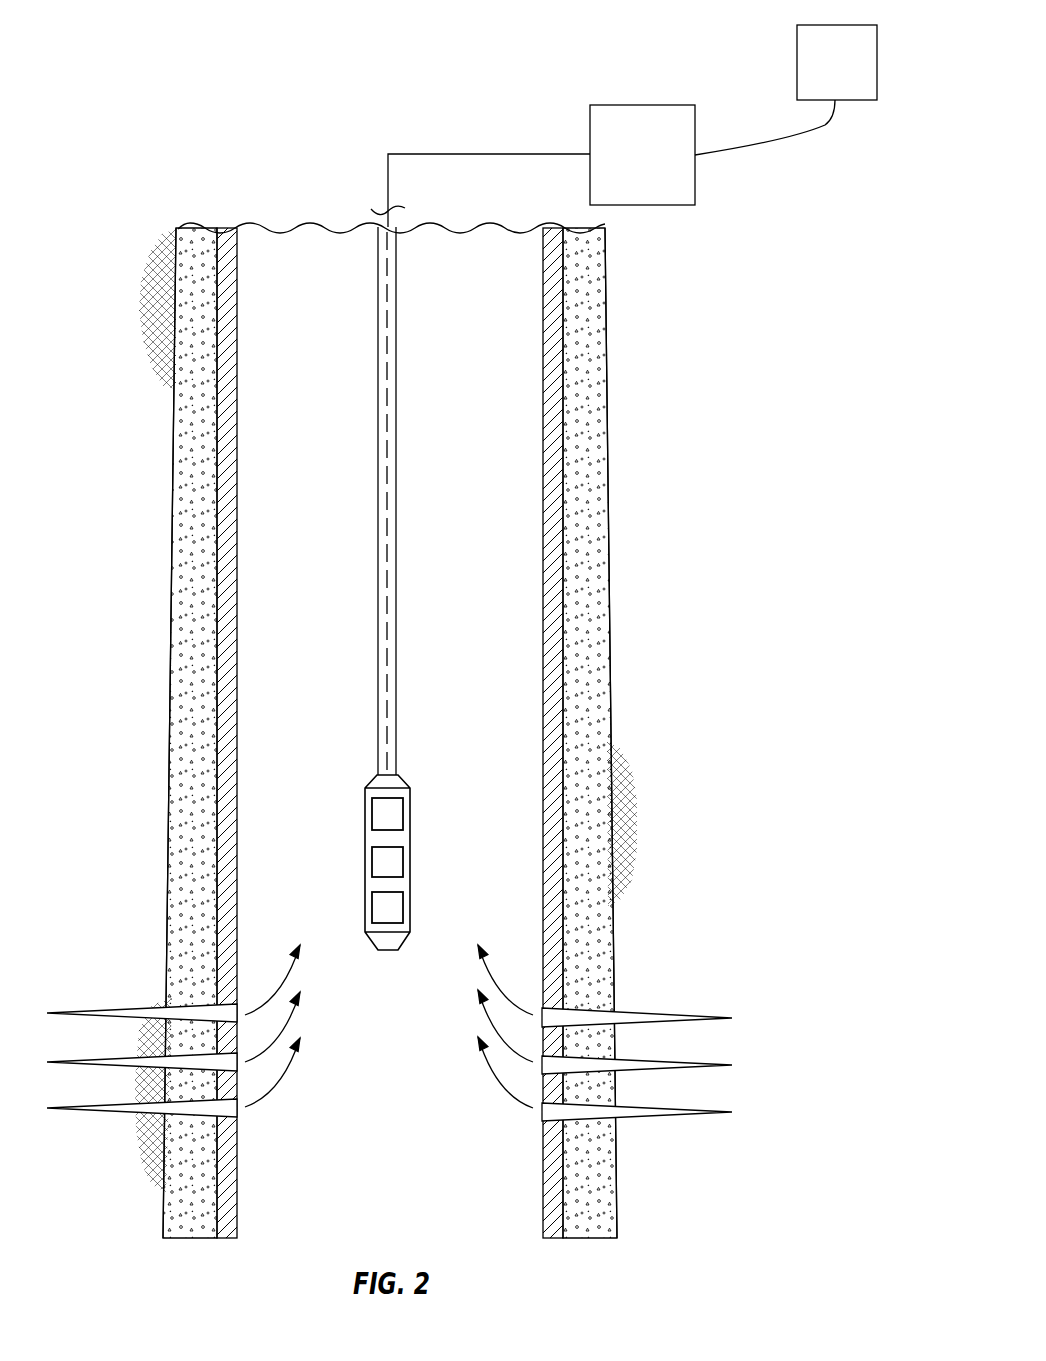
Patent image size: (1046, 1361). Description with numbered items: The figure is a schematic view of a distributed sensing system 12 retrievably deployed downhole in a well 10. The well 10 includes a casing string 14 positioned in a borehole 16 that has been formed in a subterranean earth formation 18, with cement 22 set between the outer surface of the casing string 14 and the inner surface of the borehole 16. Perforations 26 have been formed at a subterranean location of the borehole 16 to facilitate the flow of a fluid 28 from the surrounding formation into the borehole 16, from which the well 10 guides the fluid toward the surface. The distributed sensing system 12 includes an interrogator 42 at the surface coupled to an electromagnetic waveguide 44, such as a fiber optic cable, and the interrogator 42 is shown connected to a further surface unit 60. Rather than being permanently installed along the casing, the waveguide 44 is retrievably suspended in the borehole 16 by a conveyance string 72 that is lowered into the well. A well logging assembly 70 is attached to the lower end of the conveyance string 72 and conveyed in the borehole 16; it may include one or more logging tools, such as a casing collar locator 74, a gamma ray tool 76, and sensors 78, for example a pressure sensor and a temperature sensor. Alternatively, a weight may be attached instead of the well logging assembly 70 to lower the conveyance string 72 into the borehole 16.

The well 10 is at (216, 184).
The distributed sensing system 12 is at (166, 99).
The casing string 14 is at (216, 483).
The borehole 16 is at (176, 337).
The subterranean earth formation 18 is at (686, 575).
The cement 22 is at (191, 648).
The perforations 26 is at (147, 1009).
The fluid 28 is at (278, 1083).
The interrogator 42 is at (712, 152).
The electromagnetic waveguide 44 is at (490, 153).
The remote system 60 is at (837, 62).
The well logging assembly 70 is at (406, 855).
The conveyance string 72 is at (378, 492).
The casing collar locator 74 is at (371, 908).
The gamma ray tool 76 is at (404, 866).
The sensors 78 is at (371, 811).